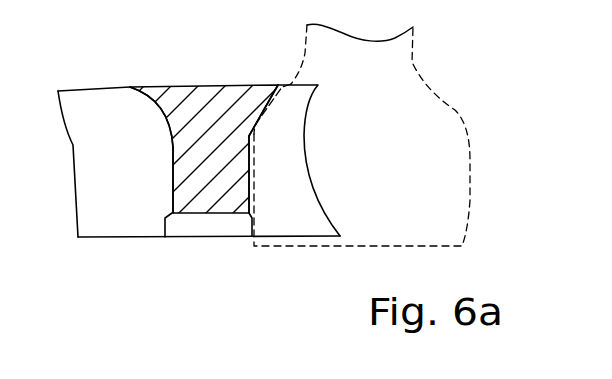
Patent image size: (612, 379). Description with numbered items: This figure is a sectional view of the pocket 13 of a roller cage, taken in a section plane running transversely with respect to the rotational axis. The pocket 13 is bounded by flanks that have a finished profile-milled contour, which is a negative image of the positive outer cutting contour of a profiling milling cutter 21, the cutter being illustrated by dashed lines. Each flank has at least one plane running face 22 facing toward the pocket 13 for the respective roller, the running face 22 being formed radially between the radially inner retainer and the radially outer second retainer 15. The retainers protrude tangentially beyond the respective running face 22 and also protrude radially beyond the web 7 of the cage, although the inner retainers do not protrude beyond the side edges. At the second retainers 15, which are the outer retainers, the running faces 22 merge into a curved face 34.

The web 7 is at (205, 158).
The pocket 13 is at (97, 111).
The second retainer 15 is at (163, 100).
The running face 22 is at (165, 173).
The curved face 34 is at (265, 116).
The profiling milling cutter 21 is at (428, 178).